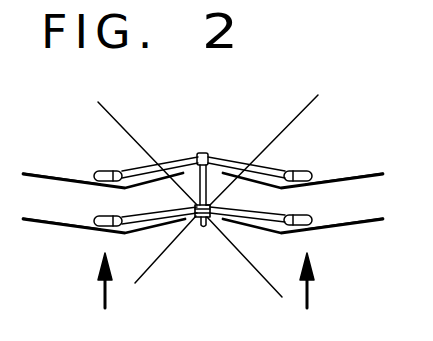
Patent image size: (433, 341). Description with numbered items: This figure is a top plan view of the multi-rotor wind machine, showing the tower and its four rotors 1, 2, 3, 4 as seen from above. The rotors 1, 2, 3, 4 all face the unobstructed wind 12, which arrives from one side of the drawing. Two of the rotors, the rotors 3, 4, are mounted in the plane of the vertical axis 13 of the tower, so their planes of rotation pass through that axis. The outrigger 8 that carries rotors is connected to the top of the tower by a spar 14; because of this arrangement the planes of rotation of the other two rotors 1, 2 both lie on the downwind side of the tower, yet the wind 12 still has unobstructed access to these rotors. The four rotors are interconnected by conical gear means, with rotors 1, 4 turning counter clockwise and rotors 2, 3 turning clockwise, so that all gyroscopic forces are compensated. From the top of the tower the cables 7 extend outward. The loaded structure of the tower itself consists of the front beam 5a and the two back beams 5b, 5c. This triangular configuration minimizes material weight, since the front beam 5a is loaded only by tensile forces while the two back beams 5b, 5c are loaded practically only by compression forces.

The rotor 1 is at (128, 188).
The rotor 2 is at (352, 177).
The rotor 3 is at (134, 232).
The rotor 4 is at (347, 224).
The front beam 5a is at (204, 227).
The back beam 5b is at (195, 206).
The back beam 5c is at (211, 204).
The cable 7 is at (267, 281).
The outrigger 8 is at (205, 161).
The unobstructed wind 12 is at (208, 203).
The vertical axis 13 is at (208, 220).
The spar 14 is at (220, 159).